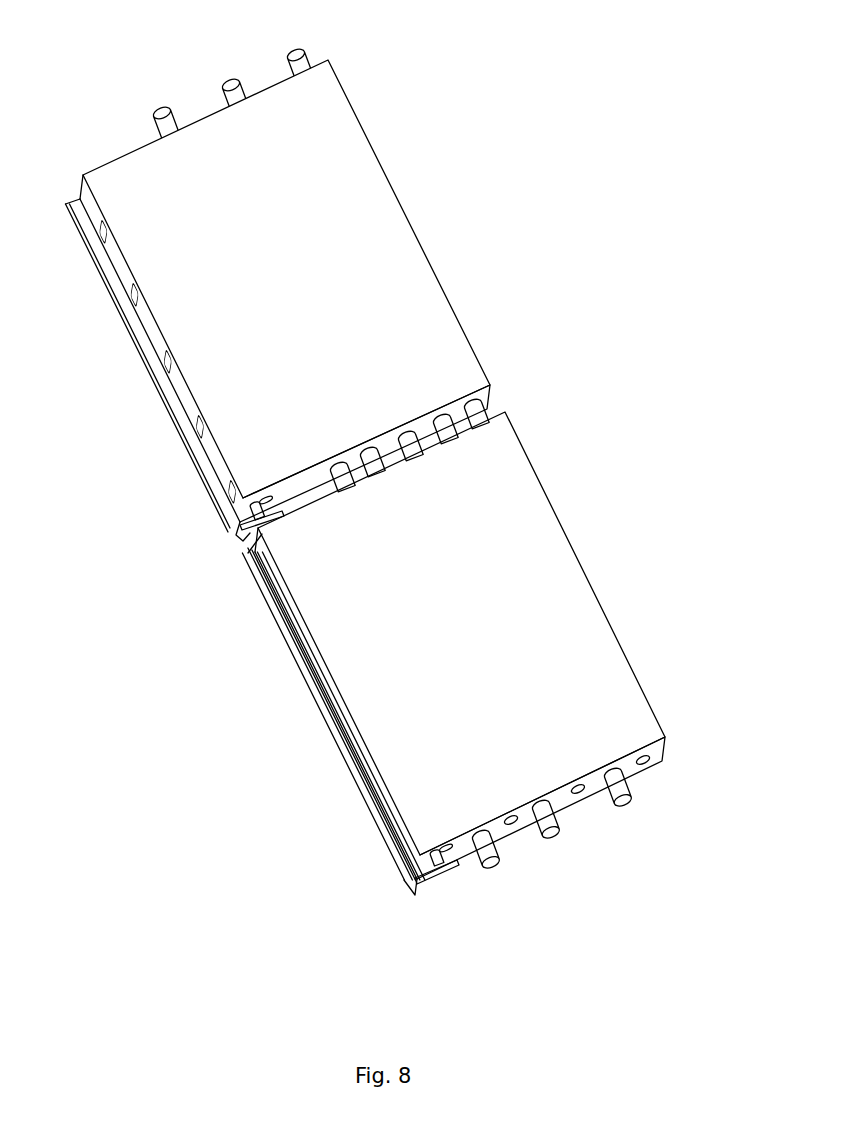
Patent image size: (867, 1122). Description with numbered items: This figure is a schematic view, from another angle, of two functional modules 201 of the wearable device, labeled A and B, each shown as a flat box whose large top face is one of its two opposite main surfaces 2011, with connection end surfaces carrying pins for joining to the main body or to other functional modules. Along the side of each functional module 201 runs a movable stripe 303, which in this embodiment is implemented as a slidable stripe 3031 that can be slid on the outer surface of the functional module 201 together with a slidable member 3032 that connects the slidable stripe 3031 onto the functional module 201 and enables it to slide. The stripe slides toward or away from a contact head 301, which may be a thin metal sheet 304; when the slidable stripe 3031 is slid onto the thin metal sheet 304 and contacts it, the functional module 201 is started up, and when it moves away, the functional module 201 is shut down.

The functional module 201 is at (419, 467).
The main surface 2011 is at (388, 277).
The contact head 301 is at (95, 205).
The movable stripe 303 is at (275, 579).
The slidable stripe 3031 is at (217, 484).
The slidable member 3032 is at (253, 514).
The thin metal sheet 304 is at (258, 549).